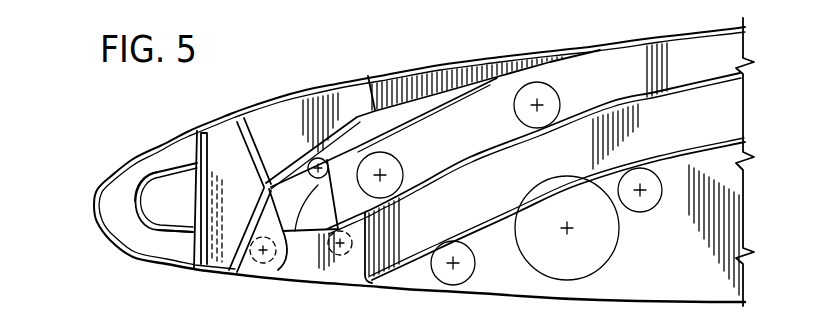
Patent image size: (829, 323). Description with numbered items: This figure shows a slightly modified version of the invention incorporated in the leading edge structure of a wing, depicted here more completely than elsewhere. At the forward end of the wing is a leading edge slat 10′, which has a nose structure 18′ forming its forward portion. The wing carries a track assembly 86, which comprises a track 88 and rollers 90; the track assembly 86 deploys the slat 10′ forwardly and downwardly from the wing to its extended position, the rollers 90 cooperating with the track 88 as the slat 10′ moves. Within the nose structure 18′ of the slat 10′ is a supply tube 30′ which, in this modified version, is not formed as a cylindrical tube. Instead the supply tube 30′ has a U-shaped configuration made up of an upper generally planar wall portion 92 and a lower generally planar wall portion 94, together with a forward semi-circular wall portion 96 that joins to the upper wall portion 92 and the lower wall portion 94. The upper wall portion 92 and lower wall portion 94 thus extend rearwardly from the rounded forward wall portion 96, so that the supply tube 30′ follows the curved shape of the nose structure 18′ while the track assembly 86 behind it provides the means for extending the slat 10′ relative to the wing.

The leading edge slat 10′ is at (170, 130).
The nose structure 18′ is at (110, 167).
The supply tube 30′ is at (155, 173).
The track assembly 86 is at (613, 97).
The track 88 is at (677, 90).
The rollers 90 is at (515, 108).
The upper generally planar wall portion 92 is at (207, 190).
The lower generally planar wall portion 94 is at (167, 235).
The forward semi-circular wall portion 96 is at (136, 190).